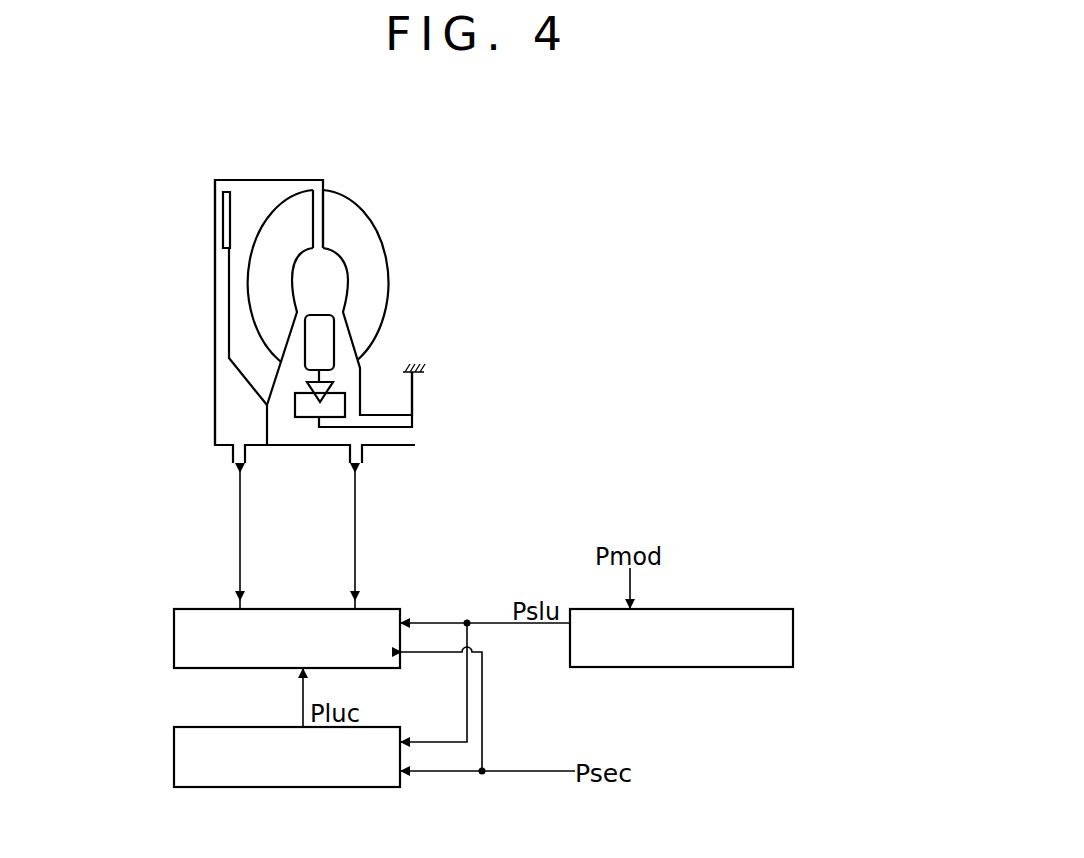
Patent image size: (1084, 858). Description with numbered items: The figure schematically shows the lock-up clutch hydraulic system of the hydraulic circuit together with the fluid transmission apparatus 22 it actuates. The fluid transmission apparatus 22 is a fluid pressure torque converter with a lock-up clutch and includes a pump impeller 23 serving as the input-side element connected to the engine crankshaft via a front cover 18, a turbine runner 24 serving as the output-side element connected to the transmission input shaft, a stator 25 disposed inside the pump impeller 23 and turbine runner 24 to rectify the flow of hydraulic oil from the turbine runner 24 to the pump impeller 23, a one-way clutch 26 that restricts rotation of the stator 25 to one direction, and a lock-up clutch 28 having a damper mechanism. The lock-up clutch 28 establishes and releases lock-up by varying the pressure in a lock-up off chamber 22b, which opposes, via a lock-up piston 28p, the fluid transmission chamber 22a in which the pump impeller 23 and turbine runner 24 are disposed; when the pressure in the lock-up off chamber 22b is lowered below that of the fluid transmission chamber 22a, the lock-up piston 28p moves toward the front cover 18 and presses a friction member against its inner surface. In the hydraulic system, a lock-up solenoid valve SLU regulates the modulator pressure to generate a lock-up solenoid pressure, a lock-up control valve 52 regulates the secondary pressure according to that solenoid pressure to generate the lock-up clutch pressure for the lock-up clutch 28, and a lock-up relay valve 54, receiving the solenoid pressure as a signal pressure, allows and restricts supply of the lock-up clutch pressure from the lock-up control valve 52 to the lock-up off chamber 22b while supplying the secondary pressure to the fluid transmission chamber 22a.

The front cover 18 is at (215, 268).
The fluid transmission apparatus 22 is at (392, 188).
The fluid transmission chamber 22a is at (250, 215).
The lock-up off chamber 22b is at (227, 430).
The pump impeller 23 is at (383, 245).
The turbine runner 24 is at (272, 207).
The stator 25 is at (320, 318).
The one-way clutch 26 is at (346, 403).
The lock-up clutch 28 is at (205, 227).
The lock-up piston 28p is at (229, 310).
The lock-up control valve 52 is at (174, 756).
The lock-up relay valve 54 is at (174, 638).
The lock-up solenoid valve SLU is at (793, 638).